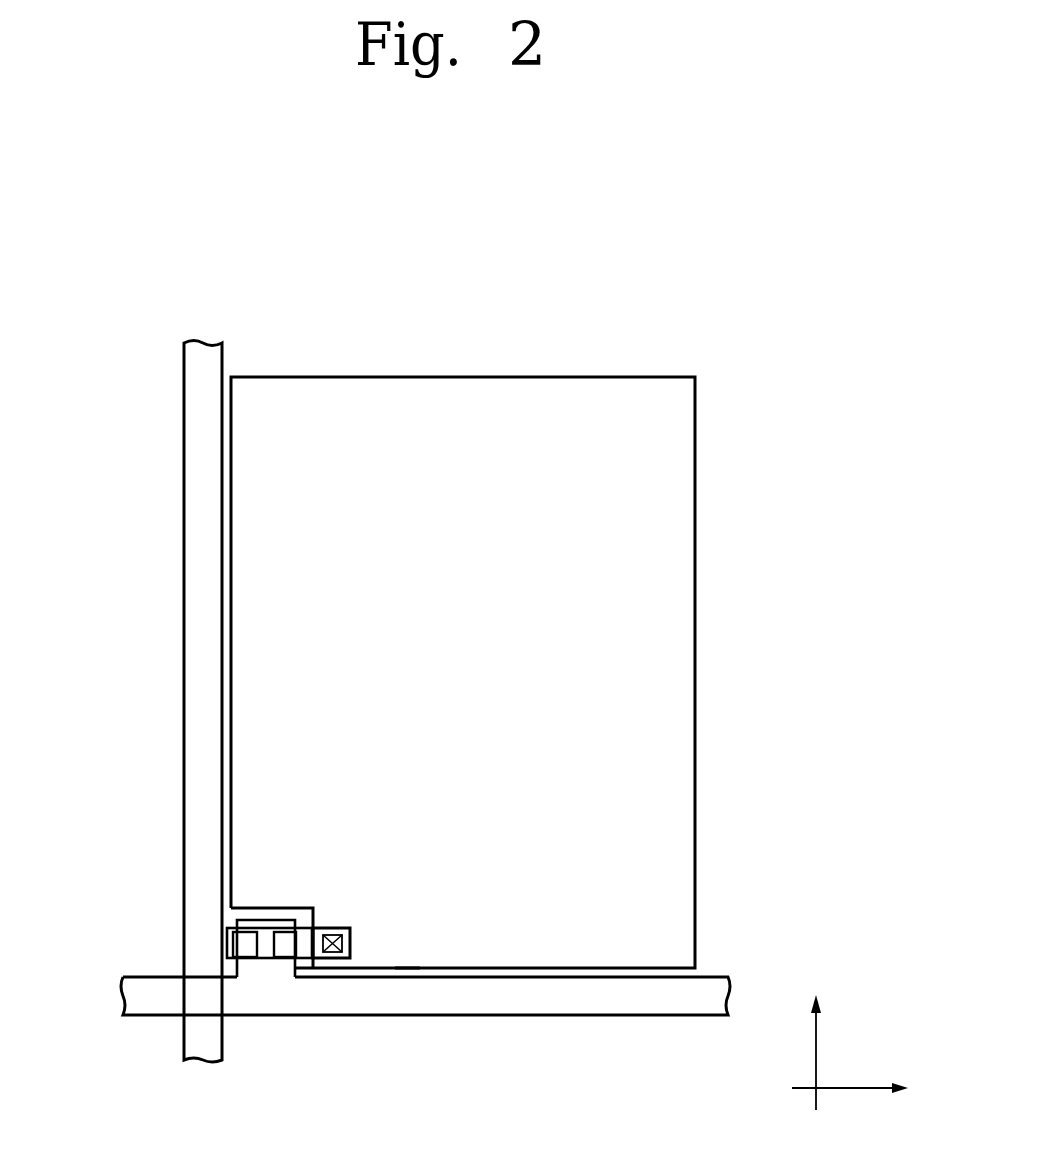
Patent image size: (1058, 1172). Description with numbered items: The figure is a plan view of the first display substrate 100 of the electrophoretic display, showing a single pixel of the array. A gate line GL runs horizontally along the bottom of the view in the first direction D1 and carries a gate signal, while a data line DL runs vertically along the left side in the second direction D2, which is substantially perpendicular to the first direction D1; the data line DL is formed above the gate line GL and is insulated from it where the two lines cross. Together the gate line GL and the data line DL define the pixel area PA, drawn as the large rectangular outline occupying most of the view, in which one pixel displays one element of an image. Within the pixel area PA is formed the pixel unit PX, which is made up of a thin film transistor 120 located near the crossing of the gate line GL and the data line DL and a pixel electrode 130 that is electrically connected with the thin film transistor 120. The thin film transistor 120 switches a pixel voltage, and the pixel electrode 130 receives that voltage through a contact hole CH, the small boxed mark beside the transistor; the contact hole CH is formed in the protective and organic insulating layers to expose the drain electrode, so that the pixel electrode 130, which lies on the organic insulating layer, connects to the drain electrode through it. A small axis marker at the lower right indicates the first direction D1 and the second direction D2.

The first display substrate 100 is at (782, 286).
The pixel area PA is at (467, 411).
The contact hole CH is at (332, 932).
The gate line GL is at (133, 994).
The data line DL is at (200, 1057).
The thin film transistor 120 is at (277, 970).
The pixel electrode 130 is at (405, 938).
The pixel unit PX is at (433, 1077).
The first direction D1 is at (789, 1052).
The second direction D2 is at (850, 1114).